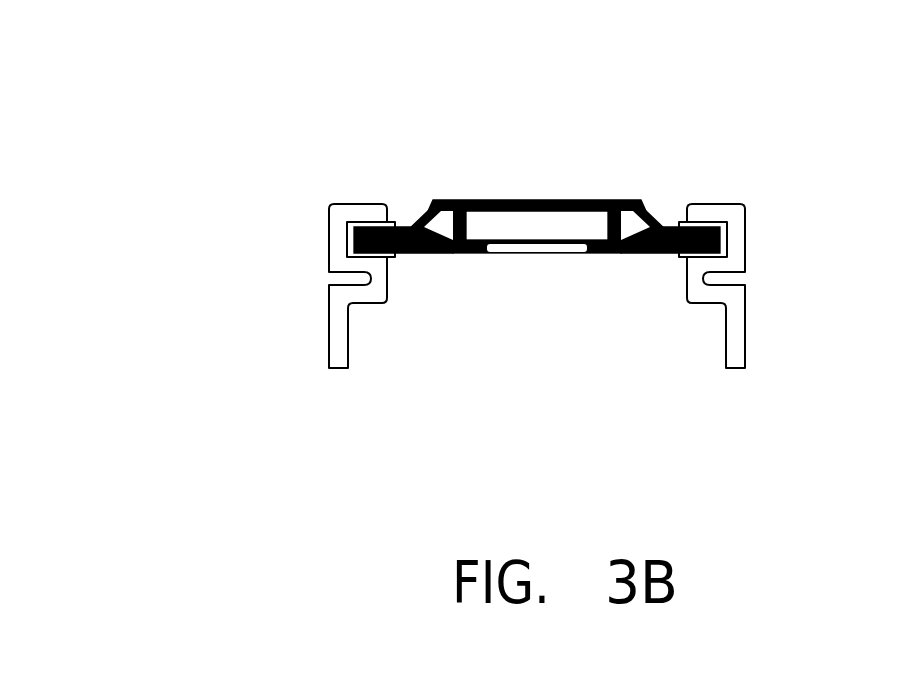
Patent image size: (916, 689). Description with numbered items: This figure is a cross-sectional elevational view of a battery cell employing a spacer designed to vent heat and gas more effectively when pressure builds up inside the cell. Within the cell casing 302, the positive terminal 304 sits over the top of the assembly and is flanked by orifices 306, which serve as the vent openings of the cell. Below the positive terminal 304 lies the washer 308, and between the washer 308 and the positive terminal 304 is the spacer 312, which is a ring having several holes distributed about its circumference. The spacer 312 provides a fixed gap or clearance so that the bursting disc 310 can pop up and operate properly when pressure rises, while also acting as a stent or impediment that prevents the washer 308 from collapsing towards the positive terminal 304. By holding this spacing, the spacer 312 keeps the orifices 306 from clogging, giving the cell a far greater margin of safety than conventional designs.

The casing / can 302 is at (300, 320).
The positive terminal 304 is at (517, 190).
The orifices 306 is at (408, 198).
The washer 308 is at (170, 452).
The bursting disc 310 is at (540, 255).
The spacer 312 is at (650, 255).